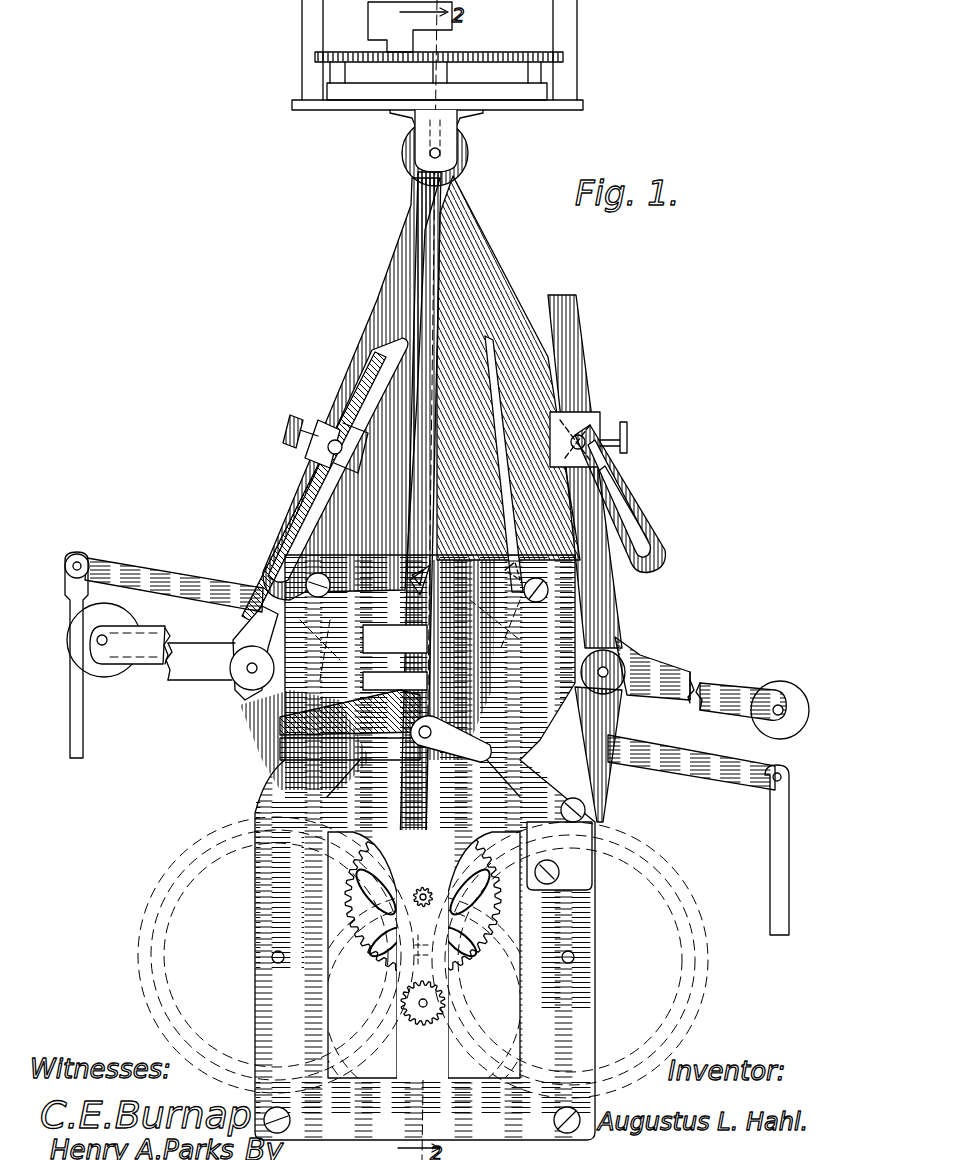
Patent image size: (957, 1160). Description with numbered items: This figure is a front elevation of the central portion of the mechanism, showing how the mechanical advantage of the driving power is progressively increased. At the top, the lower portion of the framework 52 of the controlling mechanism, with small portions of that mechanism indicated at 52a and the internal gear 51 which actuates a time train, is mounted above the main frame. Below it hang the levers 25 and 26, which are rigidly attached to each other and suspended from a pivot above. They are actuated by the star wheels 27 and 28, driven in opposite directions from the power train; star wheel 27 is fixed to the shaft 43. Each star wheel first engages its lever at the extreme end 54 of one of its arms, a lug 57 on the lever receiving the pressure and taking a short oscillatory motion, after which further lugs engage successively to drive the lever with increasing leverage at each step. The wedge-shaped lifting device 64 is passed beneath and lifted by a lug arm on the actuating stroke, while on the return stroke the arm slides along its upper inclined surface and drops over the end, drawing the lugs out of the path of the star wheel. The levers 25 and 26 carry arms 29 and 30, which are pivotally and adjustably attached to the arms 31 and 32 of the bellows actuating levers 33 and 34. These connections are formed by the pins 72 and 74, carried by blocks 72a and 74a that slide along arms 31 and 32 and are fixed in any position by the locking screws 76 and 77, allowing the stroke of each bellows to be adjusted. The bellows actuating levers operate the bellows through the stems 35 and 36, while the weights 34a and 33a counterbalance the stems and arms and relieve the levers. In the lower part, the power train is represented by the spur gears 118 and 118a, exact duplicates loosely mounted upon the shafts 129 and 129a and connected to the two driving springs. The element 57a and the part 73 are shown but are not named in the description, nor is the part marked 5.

The link 5 is at (630, 530).
The lever 25 is at (412, 407).
The lever 26 is at (495, 385).
The star wheel 27 is at (300, 760).
The star wheel 28 is at (245, 715).
The arm 29 is at (385, 352).
The arm 30 is at (620, 480).
The arm 31 is at (258, 627).
The arm 32 is at (600, 610).
The bellows actuating lever 33 is at (693, 765).
The weight 33a is at (112, 630).
The bellows actuating lever 34 is at (152, 565).
The weight 34a is at (790, 690).
The stem 35 is at (772, 833).
The stem 36 is at (108, 728).
The shaft 43 is at (451, 739).
The internal gear 51 is at (355, 90).
The framework 52 is at (295, 110).
The controlling mechanism portions 52a is at (473, 50).
The extreme end of star wheel arm 54 is at (295, 722).
The lug 57 is at (427, 553).
The right arm 57a is at (503, 567).
The lifting device 64 is at (395, 580).
The pin 72 is at (330, 452).
The block 72a is at (362, 444).
The link bar 73 is at (318, 507).
The pin 74 is at (580, 442).
The block 74a is at (575, 452).
The locking screw 76 is at (285, 433).
The locking screw 77 is at (628, 446).
The spur gear 118 is at (247, 955).
The spur gear 118a is at (697, 935).
The shaft 129 is at (272, 956).
The shaft 129a is at (574, 956).